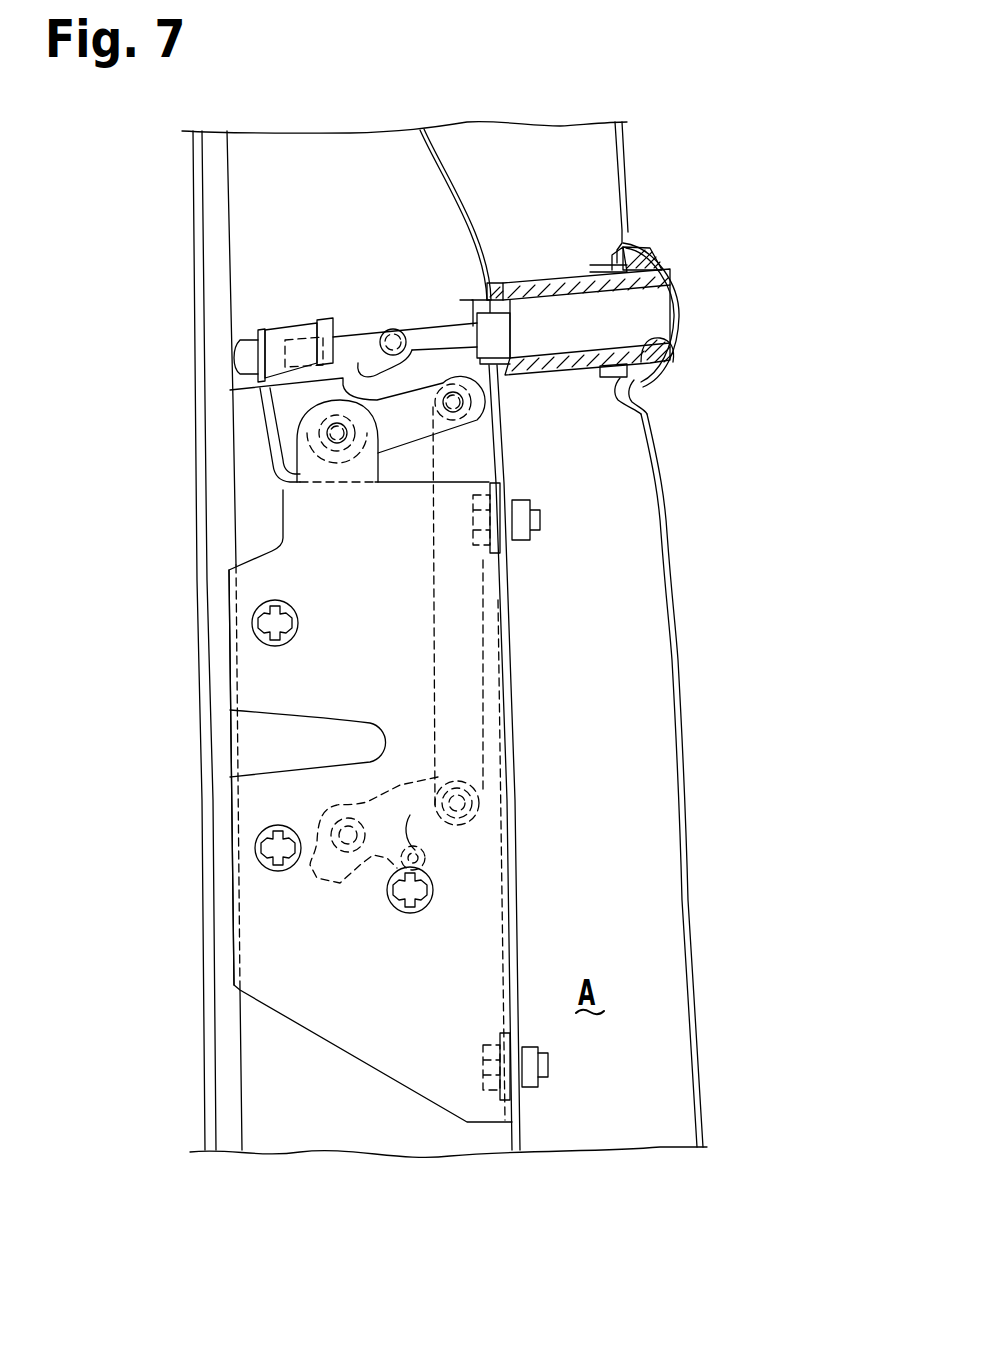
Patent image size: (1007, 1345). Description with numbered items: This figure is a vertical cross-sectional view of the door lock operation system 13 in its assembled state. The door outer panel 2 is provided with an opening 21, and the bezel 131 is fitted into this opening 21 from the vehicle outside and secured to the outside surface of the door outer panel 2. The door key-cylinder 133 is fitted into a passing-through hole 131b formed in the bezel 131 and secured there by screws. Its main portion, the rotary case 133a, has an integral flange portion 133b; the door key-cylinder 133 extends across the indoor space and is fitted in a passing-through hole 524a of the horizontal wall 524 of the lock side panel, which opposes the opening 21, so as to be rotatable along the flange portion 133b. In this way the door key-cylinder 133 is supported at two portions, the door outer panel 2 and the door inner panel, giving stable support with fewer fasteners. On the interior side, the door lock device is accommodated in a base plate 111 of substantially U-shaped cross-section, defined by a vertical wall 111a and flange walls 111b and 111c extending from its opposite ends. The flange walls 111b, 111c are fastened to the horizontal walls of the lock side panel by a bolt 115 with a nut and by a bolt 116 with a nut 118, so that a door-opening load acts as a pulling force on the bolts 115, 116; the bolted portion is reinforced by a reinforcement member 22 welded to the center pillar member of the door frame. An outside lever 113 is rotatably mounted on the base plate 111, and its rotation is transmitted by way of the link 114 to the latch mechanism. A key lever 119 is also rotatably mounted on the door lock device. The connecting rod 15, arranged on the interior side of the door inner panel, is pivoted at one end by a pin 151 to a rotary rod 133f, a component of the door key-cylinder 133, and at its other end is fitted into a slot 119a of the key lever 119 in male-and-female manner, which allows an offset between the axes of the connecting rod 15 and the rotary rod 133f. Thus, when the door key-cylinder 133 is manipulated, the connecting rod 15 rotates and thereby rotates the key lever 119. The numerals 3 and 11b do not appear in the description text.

The door outer panel 2 is at (668, 548).
The pillar garnish 3 is at (197, 345).
The nut 11b is at (547, 1063).
The door lock operation system 13 is at (683, 275).
The connecting rod 15 is at (350, 333).
The opening 21 is at (622, 402).
The reinforcement member 22 is at (517, 793).
The base plate 111 is at (295, 1021).
The vertical wall 111a is at (420, 613).
The flange wall 111b is at (233, 813).
The flange wall 111c is at (510, 903).
The outside lever 113 is at (393, 437).
The link 114 is at (473, 657).
The bolt 115 is at (410, 815).
The bolt 116 is at (540, 520).
The nut 118 is at (520, 540).
The key lever 119 is at (290, 375).
The slot 119a is at (283, 327).
The bezel 131 is at (675, 378).
The passing-through hole 131b is at (662, 342).
The door key-cylinder 133 is at (507, 281).
The rotary case 133a is at (577, 279).
The flange portion 133b is at (503, 388).
The rotary rod 133f is at (433, 330).
The pin 151 is at (390, 333).
The horizontal wall 524 is at (510, 700).
The passing-through hole 524a is at (477, 313).